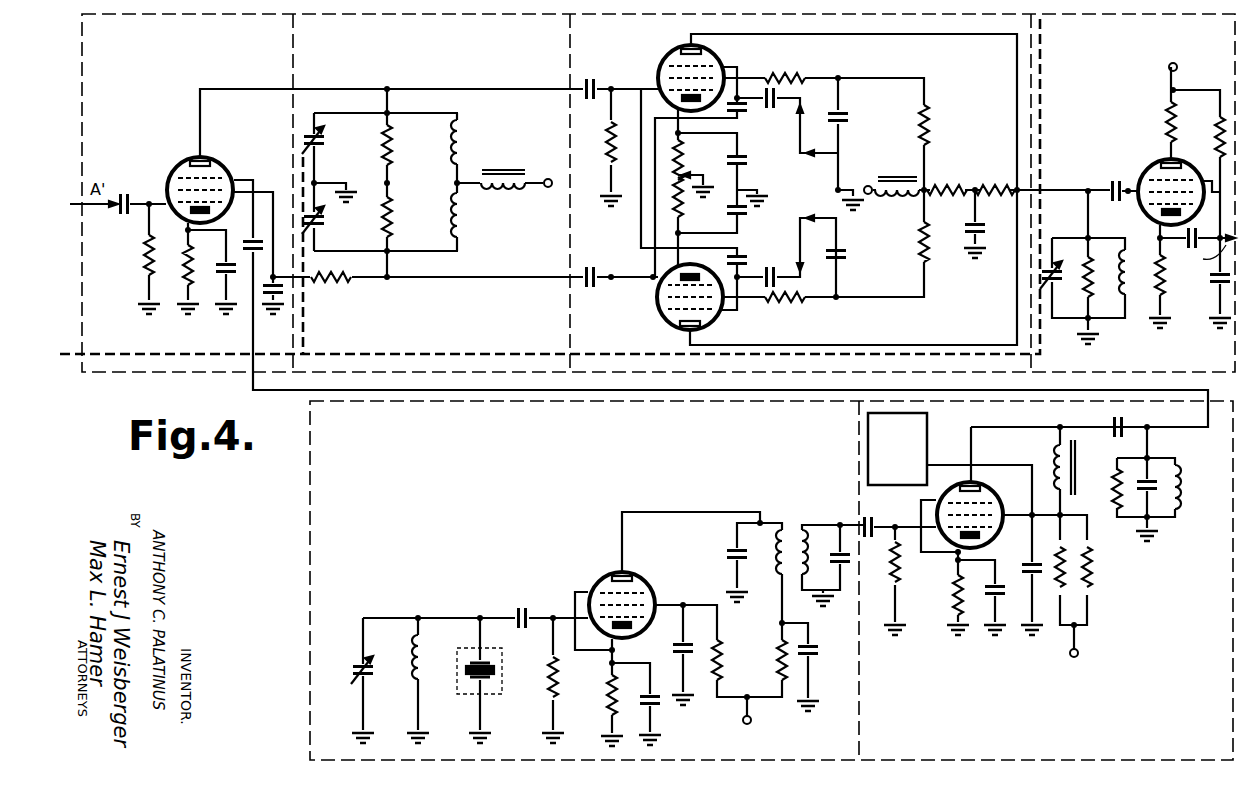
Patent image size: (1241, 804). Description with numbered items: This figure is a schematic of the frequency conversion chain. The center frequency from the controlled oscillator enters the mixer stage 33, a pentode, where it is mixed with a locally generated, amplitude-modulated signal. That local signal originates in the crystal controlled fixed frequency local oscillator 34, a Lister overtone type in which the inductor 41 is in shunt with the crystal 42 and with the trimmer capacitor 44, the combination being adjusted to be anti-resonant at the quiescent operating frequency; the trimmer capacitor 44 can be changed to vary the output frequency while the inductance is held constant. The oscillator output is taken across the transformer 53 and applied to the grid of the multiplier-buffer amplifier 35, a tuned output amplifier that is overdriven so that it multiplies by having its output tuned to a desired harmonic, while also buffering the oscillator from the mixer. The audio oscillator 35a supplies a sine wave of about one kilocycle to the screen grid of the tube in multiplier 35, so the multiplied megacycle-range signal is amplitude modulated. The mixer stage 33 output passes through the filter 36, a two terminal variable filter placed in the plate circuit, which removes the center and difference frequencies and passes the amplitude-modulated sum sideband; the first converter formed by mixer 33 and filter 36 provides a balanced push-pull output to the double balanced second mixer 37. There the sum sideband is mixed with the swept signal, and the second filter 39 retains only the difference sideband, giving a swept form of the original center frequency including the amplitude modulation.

The mixer stage 33 is at (204, 45).
The filter 36 is at (448, 49).
The second mixer 37 is at (638, 49).
The second filter 39 is at (1124, 49).
The crystal controlled fixed frequency local oscillator 34 is at (550, 444).
The multiplier-buffer amplifier 35 is at (1032, 711).
The audio oscillator 35a is at (866, 466).
The transformer 53 is at (804, 515).
The inductor 41 is at (412, 682).
The crystal 42 is at (503, 672).
The trimmer capacitor 44 is at (359, 666).